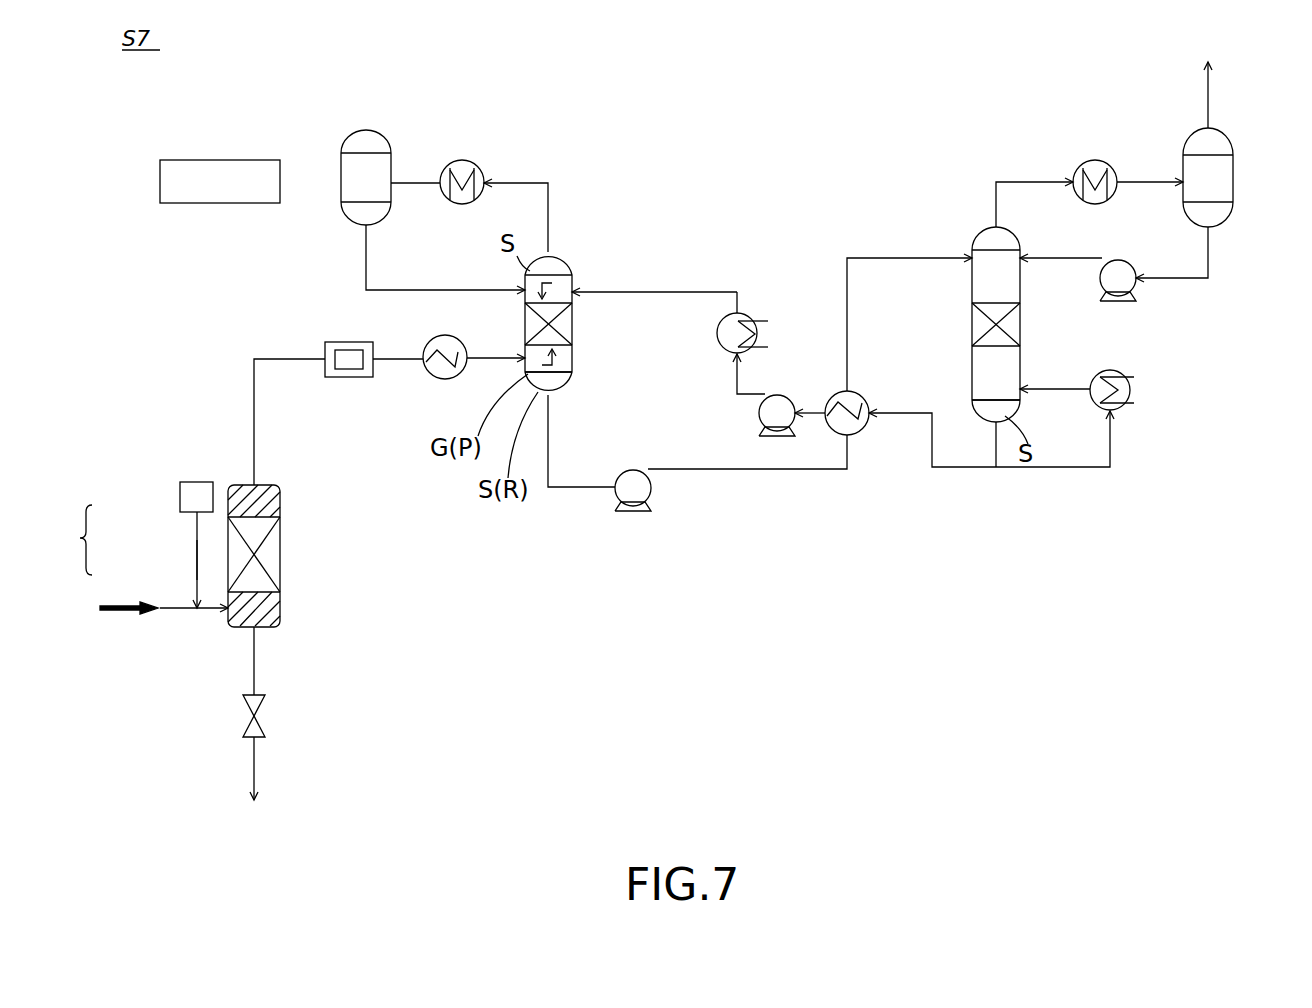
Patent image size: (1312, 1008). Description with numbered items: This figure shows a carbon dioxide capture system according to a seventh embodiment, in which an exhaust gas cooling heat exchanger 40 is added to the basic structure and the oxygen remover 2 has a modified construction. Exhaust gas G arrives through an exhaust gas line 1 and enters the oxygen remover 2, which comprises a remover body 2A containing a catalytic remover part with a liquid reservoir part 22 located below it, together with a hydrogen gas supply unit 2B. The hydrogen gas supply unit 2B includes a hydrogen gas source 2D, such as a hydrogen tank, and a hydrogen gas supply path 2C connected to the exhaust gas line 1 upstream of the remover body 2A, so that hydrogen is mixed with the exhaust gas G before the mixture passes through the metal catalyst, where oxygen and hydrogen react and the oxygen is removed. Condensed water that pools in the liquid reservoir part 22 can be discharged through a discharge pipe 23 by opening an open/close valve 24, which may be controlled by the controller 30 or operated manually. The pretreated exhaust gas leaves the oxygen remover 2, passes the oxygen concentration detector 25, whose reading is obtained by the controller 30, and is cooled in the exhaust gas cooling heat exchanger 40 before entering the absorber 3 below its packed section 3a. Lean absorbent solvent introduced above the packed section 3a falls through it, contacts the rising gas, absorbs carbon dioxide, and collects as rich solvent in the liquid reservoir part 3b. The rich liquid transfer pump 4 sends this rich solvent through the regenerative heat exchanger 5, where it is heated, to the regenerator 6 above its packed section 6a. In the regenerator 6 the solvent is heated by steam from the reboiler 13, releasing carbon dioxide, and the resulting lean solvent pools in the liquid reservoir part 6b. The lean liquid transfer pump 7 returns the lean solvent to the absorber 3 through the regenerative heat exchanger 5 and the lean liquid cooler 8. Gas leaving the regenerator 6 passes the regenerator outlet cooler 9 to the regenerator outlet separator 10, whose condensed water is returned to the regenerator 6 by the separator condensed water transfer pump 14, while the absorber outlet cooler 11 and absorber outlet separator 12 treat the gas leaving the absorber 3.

The exhaust gas line 1 is at (195, 614).
The oxygen remover 2 is at (203, 516).
The remover body 2A is at (282, 497).
The hydrogen gas supply unit 2B is at (128, 545).
The hydrogen gas supply path 2C is at (196, 560).
The hydrogen gas source 2D is at (178, 504).
The liquid reservoir part 22 is at (282, 606).
The discharge pipe 23 is at (257, 672).
The open/close valve 24 is at (264, 718).
The oxygen concentration detector 25 is at (345, 378).
The absorber 3 is at (602, 328).
The packed section 3a is at (575, 320).
The liquid reservoir part 3b is at (575, 378).
The rich liquid transfer pump 4 is at (618, 474).
The regenerative heat exchanger 5 is at (860, 432).
The regenerator 6 is at (986, 312).
The packed section 6a is at (970, 325).
The liquid reservoir part 6b is at (970, 400).
The lean liquid transfer pump 7 is at (758, 414).
The lean liquid cooler 8 is at (752, 315).
The regenerator outlet cooler 9 is at (1105, 160).
The regenerator outlet separator 10 is at (1235, 178).
The absorber outlet cooler 11 is at (478, 163).
The absorber outlet separator 12 is at (352, 133).
The reboiler 13 is at (1122, 372).
The separator condensed water transfer pump 14 is at (1100, 290).
The controller 30 is at (222, 160).
The exhaust gas cooling heat exchanger 40 is at (434, 378).